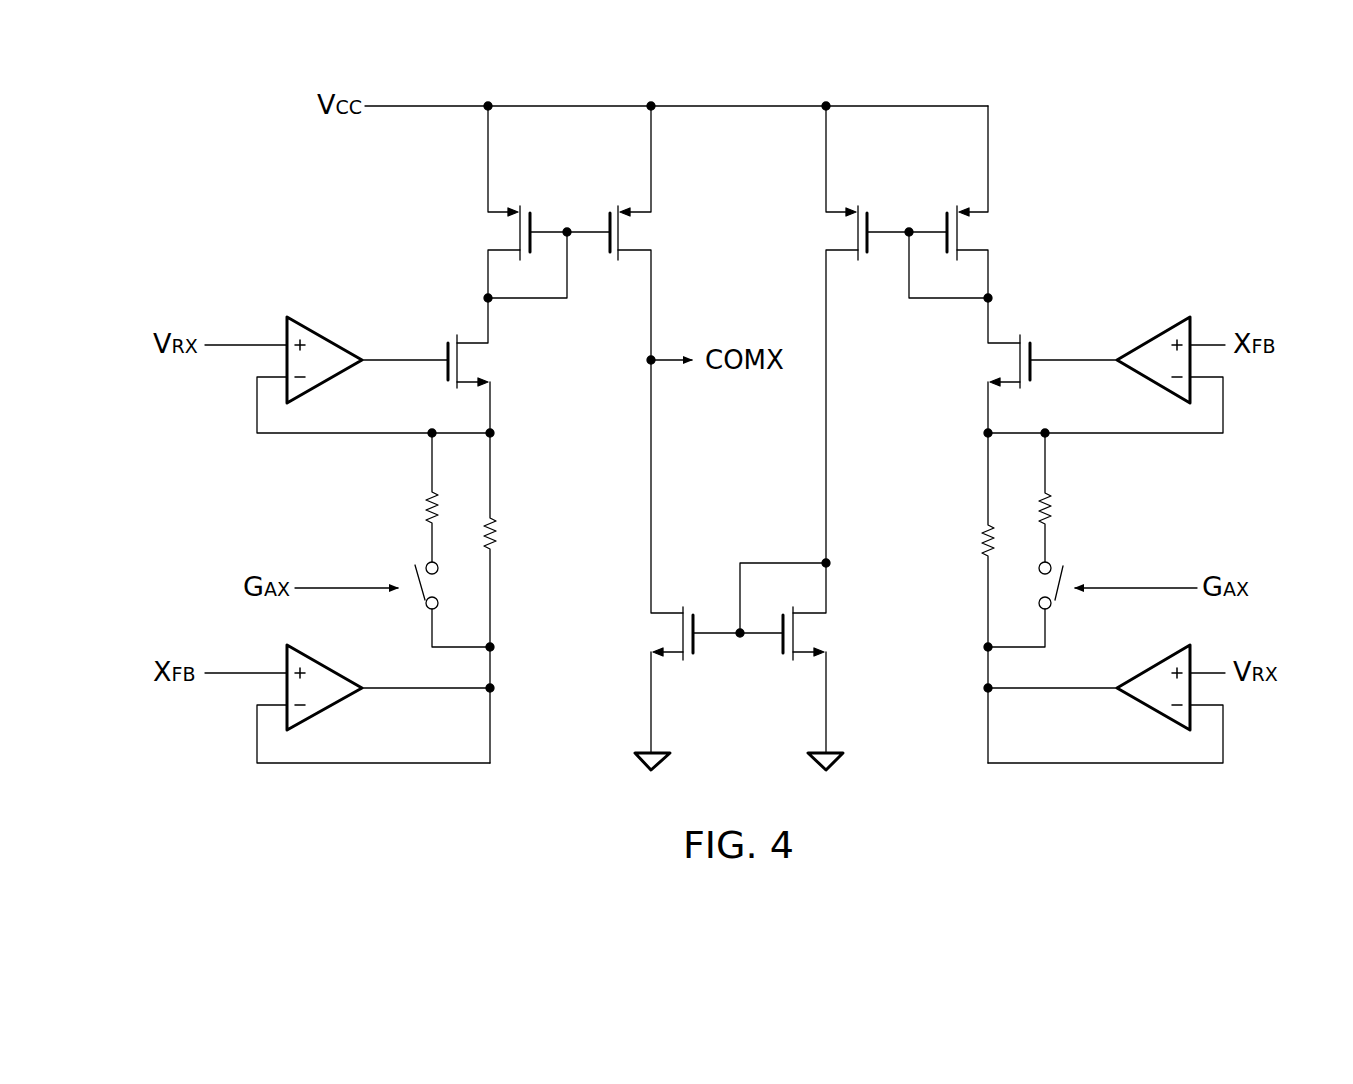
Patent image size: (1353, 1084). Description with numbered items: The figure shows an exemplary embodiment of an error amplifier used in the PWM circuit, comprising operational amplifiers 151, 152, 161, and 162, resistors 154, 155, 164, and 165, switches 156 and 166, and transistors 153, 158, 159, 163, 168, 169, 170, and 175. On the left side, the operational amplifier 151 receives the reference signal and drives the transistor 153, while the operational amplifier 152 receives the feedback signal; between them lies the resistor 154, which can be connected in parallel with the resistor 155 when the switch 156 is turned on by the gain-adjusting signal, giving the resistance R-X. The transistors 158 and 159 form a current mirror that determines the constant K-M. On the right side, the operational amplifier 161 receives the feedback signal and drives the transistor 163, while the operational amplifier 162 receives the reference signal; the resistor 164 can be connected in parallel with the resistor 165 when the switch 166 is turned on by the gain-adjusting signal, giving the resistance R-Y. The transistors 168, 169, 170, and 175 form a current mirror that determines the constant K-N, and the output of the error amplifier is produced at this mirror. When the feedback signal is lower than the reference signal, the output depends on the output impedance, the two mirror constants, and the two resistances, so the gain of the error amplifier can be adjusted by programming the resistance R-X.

The operational amplifier 151 is at (322, 332).
The operational amplifier 152 is at (322, 660).
The transistor 153 is at (492, 355).
The resistor 154 is at (502, 533).
The resistor 155 is at (418, 508).
The switch 156 is at (410, 566).
The transistor 158 is at (482, 233).
The transistor 159 is at (651, 233).
The operational amplifier 161 is at (1150, 385).
The operational amplifier 162 is at (1150, 712).
The transistor 163 is at (988, 357).
The resistor 164 is at (972, 540).
The resistor 165 is at (1058, 510).
The switch 166 is at (1065, 566).
The transistor 168 is at (992, 233).
The transistor 169 is at (825, 233).
The transistor 170 is at (832, 638).
The transistor 175 is at (650, 632).